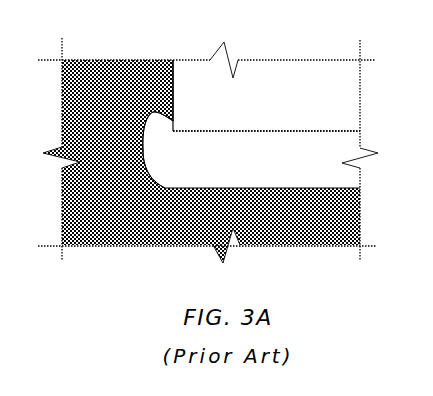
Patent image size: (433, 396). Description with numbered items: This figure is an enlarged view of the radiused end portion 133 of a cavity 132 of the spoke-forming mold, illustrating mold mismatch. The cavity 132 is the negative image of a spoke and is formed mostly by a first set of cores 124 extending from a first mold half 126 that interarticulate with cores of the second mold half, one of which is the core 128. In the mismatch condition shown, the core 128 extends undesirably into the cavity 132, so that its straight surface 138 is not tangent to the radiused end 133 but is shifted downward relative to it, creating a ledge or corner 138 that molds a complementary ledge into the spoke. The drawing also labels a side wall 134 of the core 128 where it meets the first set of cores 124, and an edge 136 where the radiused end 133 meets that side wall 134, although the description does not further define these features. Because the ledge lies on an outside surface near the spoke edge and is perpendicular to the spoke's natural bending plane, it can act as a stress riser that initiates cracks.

The first set of cores 124 is at (352, 208).
The first mold half 126 is at (70, 212).
The core of the second set 128 is at (315, 76).
The cavity 132 is at (268, 172).
The radiused end portion 133 is at (148, 168).
The side wall of insert 134 is at (173, 92).
The lip edge 136 is at (154, 111).
The ledge or corner (straight surface of core) 138 is at (282, 133).